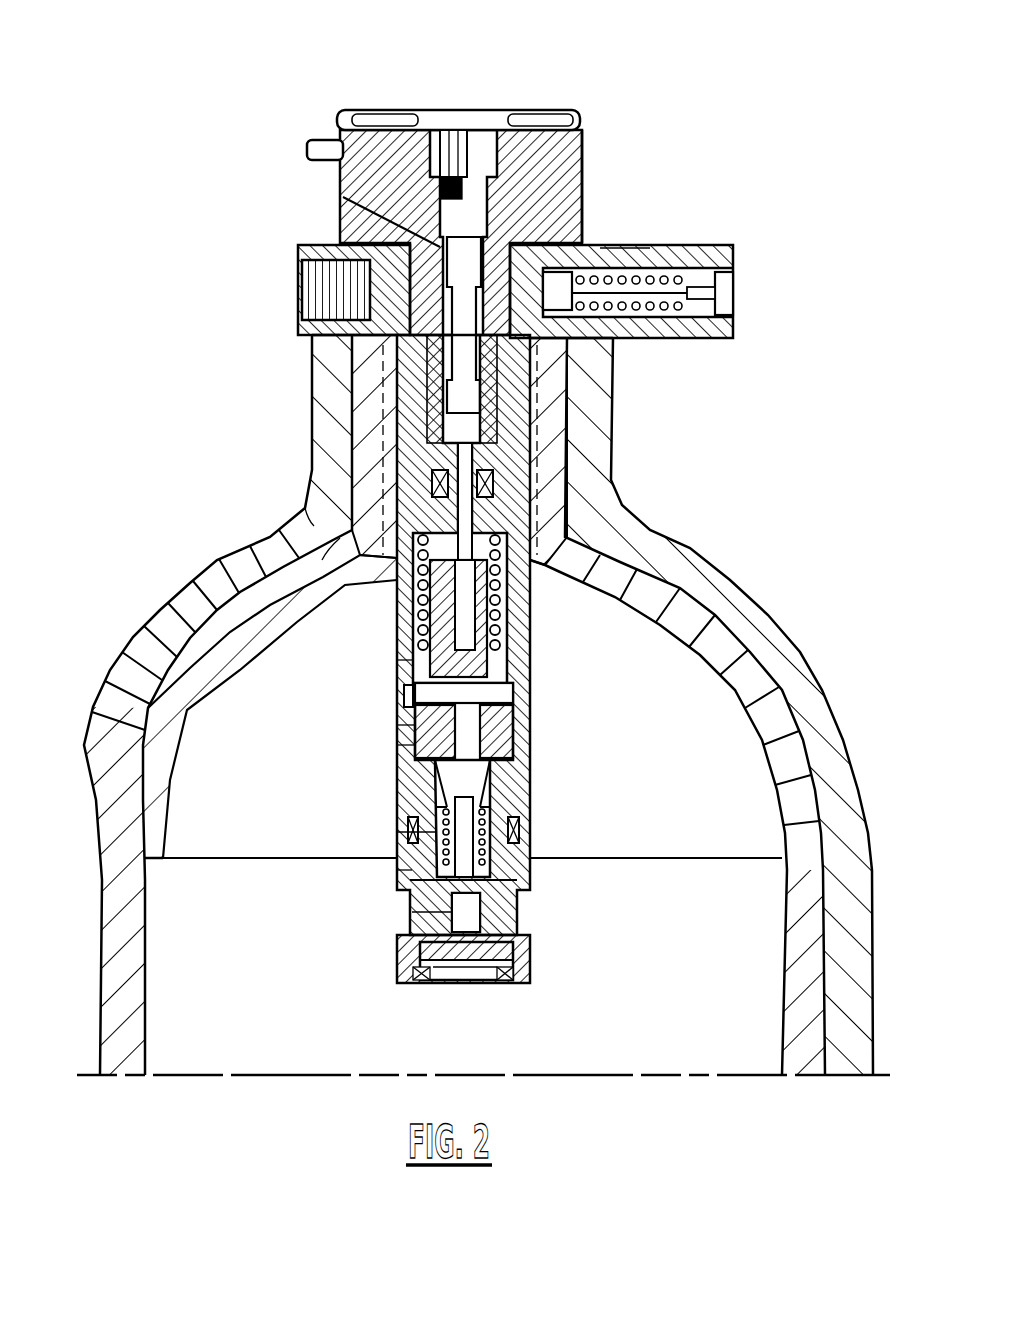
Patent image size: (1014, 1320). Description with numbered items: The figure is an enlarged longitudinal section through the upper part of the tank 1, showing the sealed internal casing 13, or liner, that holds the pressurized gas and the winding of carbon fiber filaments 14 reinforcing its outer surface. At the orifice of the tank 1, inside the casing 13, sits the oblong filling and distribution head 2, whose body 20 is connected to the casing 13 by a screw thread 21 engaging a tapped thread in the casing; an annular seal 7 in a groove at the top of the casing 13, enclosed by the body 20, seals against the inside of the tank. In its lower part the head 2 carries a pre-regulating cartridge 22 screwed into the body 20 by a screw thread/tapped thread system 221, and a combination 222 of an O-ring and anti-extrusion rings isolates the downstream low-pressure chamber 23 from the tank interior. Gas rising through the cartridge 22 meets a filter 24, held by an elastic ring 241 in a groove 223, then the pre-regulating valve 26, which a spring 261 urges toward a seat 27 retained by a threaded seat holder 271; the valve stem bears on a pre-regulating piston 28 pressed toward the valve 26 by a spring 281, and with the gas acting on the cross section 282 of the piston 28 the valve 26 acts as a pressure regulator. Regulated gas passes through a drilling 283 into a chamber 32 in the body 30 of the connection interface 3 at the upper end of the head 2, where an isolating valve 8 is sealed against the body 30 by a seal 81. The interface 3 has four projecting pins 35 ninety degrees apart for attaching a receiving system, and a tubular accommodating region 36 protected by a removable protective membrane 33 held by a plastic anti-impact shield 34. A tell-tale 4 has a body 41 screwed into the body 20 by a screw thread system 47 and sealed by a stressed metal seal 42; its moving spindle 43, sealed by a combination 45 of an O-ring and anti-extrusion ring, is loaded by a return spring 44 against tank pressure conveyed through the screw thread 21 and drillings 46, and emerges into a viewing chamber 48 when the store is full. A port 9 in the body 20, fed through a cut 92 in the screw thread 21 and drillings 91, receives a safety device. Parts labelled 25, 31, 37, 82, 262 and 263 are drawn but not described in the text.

The tank 1 is at (483, 705).
The filling and distribution head 2 is at (288, 240).
The connection interface 3 is at (499, 212).
The tell-tale 4 is at (675, 317).
The annular seal 7 is at (595, 350).
The isolating valve 8 is at (310, 235).
The port 9 is at (310, 306).
The sealed internal casing 13 is at (157, 713).
The winding of carbon fiber filaments 14 is at (187, 620).
The body 20 is at (551, 607).
The screw thread 21 is at (393, 466).
The pre-regulating cartridge 22 is at (545, 878).
The low-pressure chamber 23 is at (400, 660).
The filter 24 is at (524, 989).
The filter 25 is at (480, 908).
The pre-regulating valve 26 is at (475, 790).
The seat 27 is at (527, 757).
The pre-regulating piston 28 is at (500, 610).
The body 30 is at (588, 172).
The seal 31 is at (500, 480).
The chamber 32 is at (352, 400).
The removable protective membrane 33 is at (552, 137).
The plastic anti-impact shield 34 is at (523, 112).
The projecting pins 35 is at (326, 138).
The accommodating region 36 is at (455, 195).
The pin 37 is at (430, 165).
The body 41 is at (733, 328).
The stressed metal seal 42 is at (625, 248).
The moving spindle 43 is at (740, 290).
The return spring 44 is at (665, 250).
The combination of O-ring and anti-extrusion ring 45 is at (722, 250).
The drillings 46 is at (558, 362).
The screw thread system 47 is at (600, 343).
The viewing chamber 48 is at (740, 310).
The seal 81 is at (300, 278).
The shoulder 82 is at (435, 245).
The drillings 91 is at (310, 368).
The cut 92 is at (345, 545).
The screw thread/tapped thread system 221 is at (392, 745).
The combination of O-ring and anti-extrusion rings 222 is at (400, 832).
The groove 223 is at (520, 972).
The elastic ring 241 is at (430, 975).
The valve spring 261 is at (405, 690).
The groove 262 is at (402, 870).
The bore 263 is at (412, 910).
The threaded seat holder 271 is at (388, 726).
The spring 281 is at (290, 522).
The cross section 282 is at (527, 722).
The drilling 283 is at (470, 612).